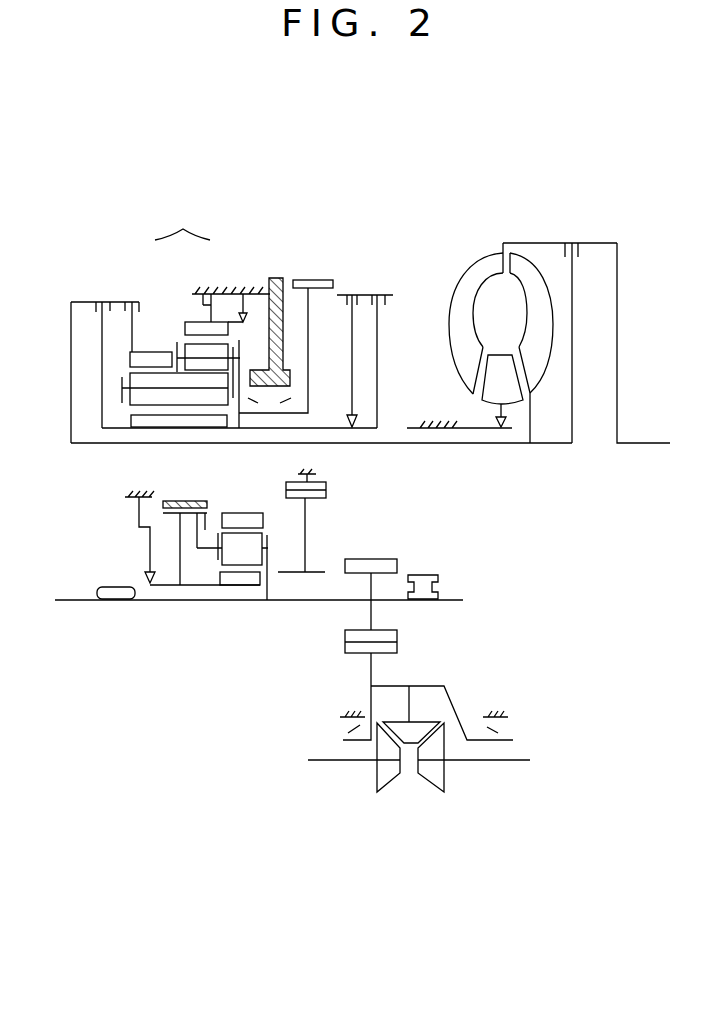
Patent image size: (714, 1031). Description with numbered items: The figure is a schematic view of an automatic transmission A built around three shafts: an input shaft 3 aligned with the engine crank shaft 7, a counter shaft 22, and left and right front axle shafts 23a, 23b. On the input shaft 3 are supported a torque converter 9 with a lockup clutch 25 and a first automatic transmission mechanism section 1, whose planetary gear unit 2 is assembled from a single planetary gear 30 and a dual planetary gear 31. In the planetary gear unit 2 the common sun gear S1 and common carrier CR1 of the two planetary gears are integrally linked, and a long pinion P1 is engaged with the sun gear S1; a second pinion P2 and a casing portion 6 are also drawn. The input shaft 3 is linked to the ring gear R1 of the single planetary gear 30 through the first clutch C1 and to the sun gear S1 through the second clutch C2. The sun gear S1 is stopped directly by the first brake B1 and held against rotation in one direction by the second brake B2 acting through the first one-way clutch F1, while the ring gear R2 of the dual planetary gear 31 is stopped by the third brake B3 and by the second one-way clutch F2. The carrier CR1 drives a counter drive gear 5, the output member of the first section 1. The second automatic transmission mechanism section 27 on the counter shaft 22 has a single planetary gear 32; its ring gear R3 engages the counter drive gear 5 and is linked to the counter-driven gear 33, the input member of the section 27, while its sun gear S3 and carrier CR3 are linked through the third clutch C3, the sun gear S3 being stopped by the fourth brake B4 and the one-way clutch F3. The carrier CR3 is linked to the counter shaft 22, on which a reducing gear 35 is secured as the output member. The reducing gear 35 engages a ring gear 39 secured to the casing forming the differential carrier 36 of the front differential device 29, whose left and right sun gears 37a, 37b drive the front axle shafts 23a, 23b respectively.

The first automatic transmission mechanism section 1 is at (76, 287).
The automatic transmission A is at (128, 232).
The planetary gear unit 2 is at (182, 223).
The input shaft 3 is at (107, 445).
The counter drive gear 5 is at (313, 280).
The case wall 6 is at (228, 290).
The engine crank shaft 7 is at (645, 443).
The torque converter 9 is at (488, 246).
The lockup clutch 25 is at (576, 243).
The single planetary gear 30 is at (146, 348).
The dual planetary gear 31 is at (190, 316).
The first (forward) clutch C1 is at (140, 340).
The second (reverse and direct) clutch C2 is at (109, 351).
The third (direct) clutch C3 is at (195, 518).
The first brake B1 is at (387, 349).
The second brake B2 is at (365, 341).
The third brake B3 is at (231, 293).
The fourth (under-drive) brake B4 is at (187, 531).
The first one-way clutch F1 is at (302, 407).
The second one-way clutch F2 is at (244, 289).
The one-way clutch F3 is at (189, 575).
The ring gear R1 is at (140, 360).
The long pinion P1 is at (140, 398).
The sun gear S1 is at (177, 423).
The carrier CR1 is at (233, 398).
The ring gear R2 is at (210, 328).
The pinion of second planetary gear P2 is at (223, 358).
The counter shaft 22 is at (160, 602).
The second automatic transmission mechanism section 27 is at (135, 538).
The single planetary gear 32 is at (248, 488).
The ring gear R3 is at (255, 520).
The sun gear S3 is at (235, 584).
The carrier CR3 is at (269, 556).
The counter-driven gear 33 is at (326, 495).
The reducing gear 35 is at (375, 559).
The ring gear 39 is at (347, 652).
The differential carrier 36 is at (422, 686).
The front differential device 29 is at (417, 784).
The left sun gear 37a is at (387, 785).
The right sun gear 37b is at (433, 785).
The left front axle shaft 23a is at (344, 762).
The right front axle shaft 23b is at (510, 763).